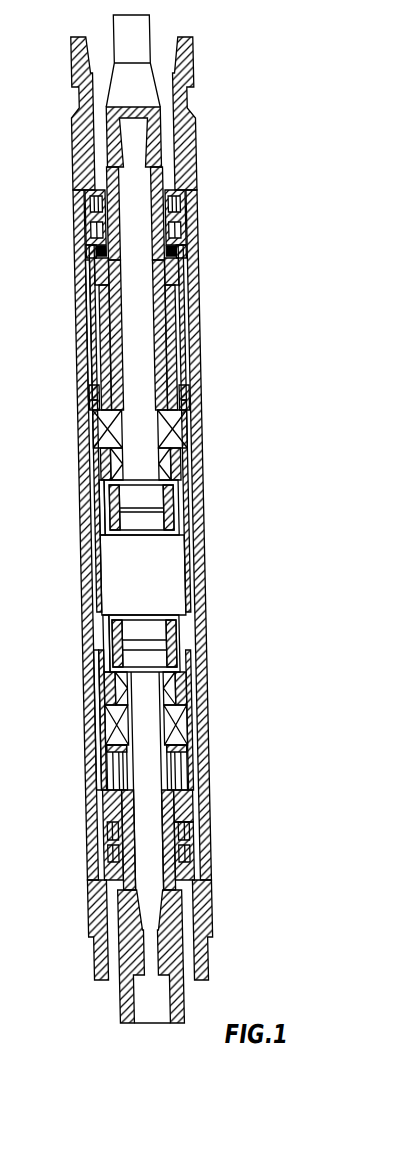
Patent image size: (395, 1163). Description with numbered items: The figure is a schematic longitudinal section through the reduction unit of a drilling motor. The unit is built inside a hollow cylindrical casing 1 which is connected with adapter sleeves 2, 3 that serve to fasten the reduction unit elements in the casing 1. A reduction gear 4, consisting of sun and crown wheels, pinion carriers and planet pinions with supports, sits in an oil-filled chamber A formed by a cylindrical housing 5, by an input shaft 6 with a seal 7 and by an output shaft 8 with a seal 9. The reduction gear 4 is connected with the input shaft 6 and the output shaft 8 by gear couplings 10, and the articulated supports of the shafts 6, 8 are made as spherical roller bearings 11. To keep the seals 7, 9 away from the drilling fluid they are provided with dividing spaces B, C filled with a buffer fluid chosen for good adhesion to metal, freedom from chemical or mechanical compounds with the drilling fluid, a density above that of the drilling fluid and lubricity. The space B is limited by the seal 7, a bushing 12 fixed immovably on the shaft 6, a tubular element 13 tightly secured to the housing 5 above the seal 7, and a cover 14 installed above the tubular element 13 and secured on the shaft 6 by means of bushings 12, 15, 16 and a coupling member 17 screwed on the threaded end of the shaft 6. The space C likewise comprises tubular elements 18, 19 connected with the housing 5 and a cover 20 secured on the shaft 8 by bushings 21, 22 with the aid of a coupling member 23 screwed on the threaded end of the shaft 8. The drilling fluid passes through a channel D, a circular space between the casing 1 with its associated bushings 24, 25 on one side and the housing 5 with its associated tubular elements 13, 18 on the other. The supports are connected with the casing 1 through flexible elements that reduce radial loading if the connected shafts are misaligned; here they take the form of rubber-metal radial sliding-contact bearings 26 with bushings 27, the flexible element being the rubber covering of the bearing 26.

The hollow cylindrical casing 1 is at (126, 535).
The adapter sleeve 2 is at (119, 113).
The adapter sleeve 3 is at (134, 930).
The reduction gear 4 is at (164, 575).
The cylindrical housing 5 is at (117, 506).
The input shaft 6 is at (168, 335).
The seal 7 is at (118, 416).
The output shaft 8 is at (178, 781).
The seal 9 is at (170, 730).
The gear coupling 10 is at (110, 576).
The spherical roller bearing 11 is at (172, 575).
The bushing 12 is at (169, 347).
The tubular element 13 is at (165, 288).
The cover 14 is at (161, 263).
The bushing 15 is at (166, 239).
The bushing 16 is at (172, 205).
The coupling member 17 is at (170, 91).
The tubular element 18 is at (118, 720).
The tubular element 19 is at (207, 767).
The cover 20 is at (211, 806).
The bushing 21 is at (87, 767).
The bushing 22 is at (211, 847).
The coupling member 23 is at (186, 956).
The bushing 24 is at (111, 322).
The bushing 25 is at (84, 835).
The rubber-metal radial sliding-contact bearing 26 is at (142, 531).
The bushing 27 is at (145, 562).
The oil-filled chamber A is at (74, 513).
The dividing space B is at (67, 330).
The dividing space C is at (77, 731).
The channel D is at (80, 660).